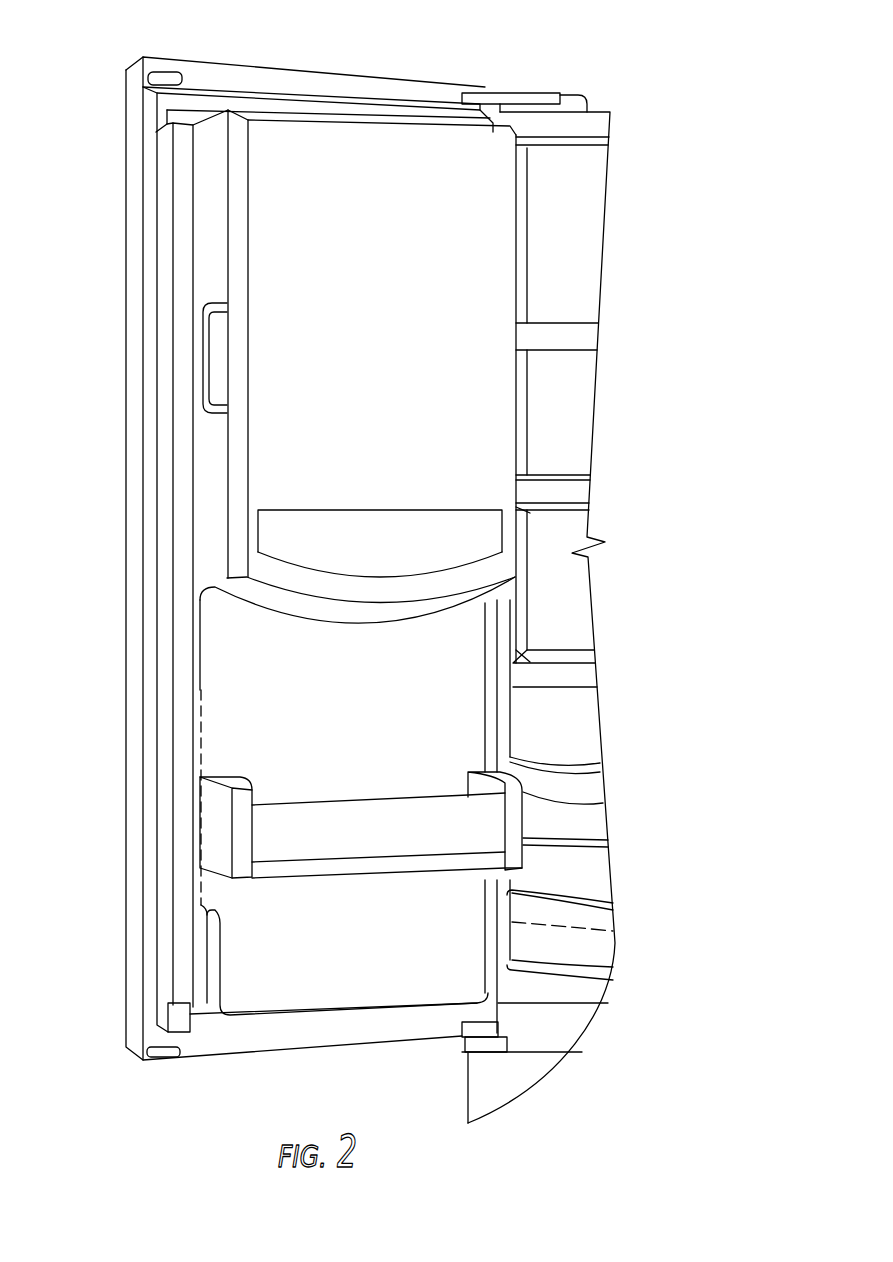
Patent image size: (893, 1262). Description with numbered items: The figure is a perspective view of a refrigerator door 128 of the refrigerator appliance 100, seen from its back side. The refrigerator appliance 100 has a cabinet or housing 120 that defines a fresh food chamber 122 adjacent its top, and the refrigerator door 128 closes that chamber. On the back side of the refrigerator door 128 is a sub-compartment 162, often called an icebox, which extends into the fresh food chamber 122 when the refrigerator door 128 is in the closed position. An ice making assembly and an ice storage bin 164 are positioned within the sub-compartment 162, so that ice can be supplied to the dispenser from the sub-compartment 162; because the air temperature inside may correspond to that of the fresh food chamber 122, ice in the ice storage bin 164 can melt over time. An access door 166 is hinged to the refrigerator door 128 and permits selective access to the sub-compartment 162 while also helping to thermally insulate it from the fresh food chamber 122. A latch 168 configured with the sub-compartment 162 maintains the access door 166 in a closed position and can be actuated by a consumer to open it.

The refrigerator appliance 100 is at (664, 261).
The cabinet or housing 120 is at (575, 217).
The fresh food chamber 122 is at (562, 598).
The refrigerator door 128 is at (124, 243).
The sub-compartment 162 is at (332, 190).
The ice storage bin 164 is at (361, 825).
The access door 166 is at (482, 412).
The latch 168 is at (215, 360).